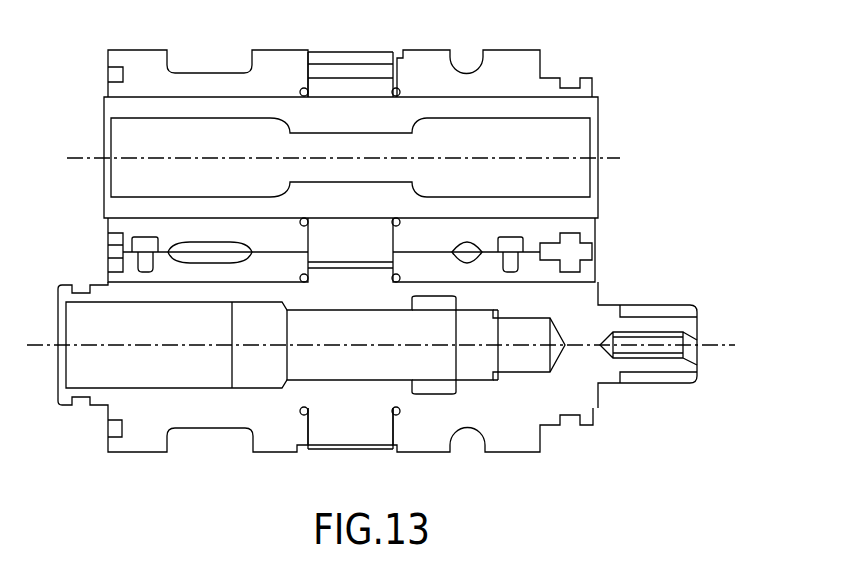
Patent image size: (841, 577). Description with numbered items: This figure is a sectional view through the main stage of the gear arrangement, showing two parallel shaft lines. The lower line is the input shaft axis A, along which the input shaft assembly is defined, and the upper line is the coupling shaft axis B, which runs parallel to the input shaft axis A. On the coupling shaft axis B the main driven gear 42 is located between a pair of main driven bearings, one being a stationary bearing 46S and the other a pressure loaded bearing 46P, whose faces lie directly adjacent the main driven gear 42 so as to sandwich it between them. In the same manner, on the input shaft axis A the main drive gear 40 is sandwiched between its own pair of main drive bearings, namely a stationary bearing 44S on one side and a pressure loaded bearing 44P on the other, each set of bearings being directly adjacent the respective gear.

The main drive gear 40 is at (370, 440).
The main driven gear 42 is at (362, 70).
The stationary bearing 44S is at (150, 440).
The pressure loaded bearing 44P is at (522, 432).
The stationary bearing 46S is at (143, 62).
The pressure loaded bearing 46P is at (523, 62).
The input shaft axis A is at (720, 345).
The coupling shaft axis B is at (620, 150).